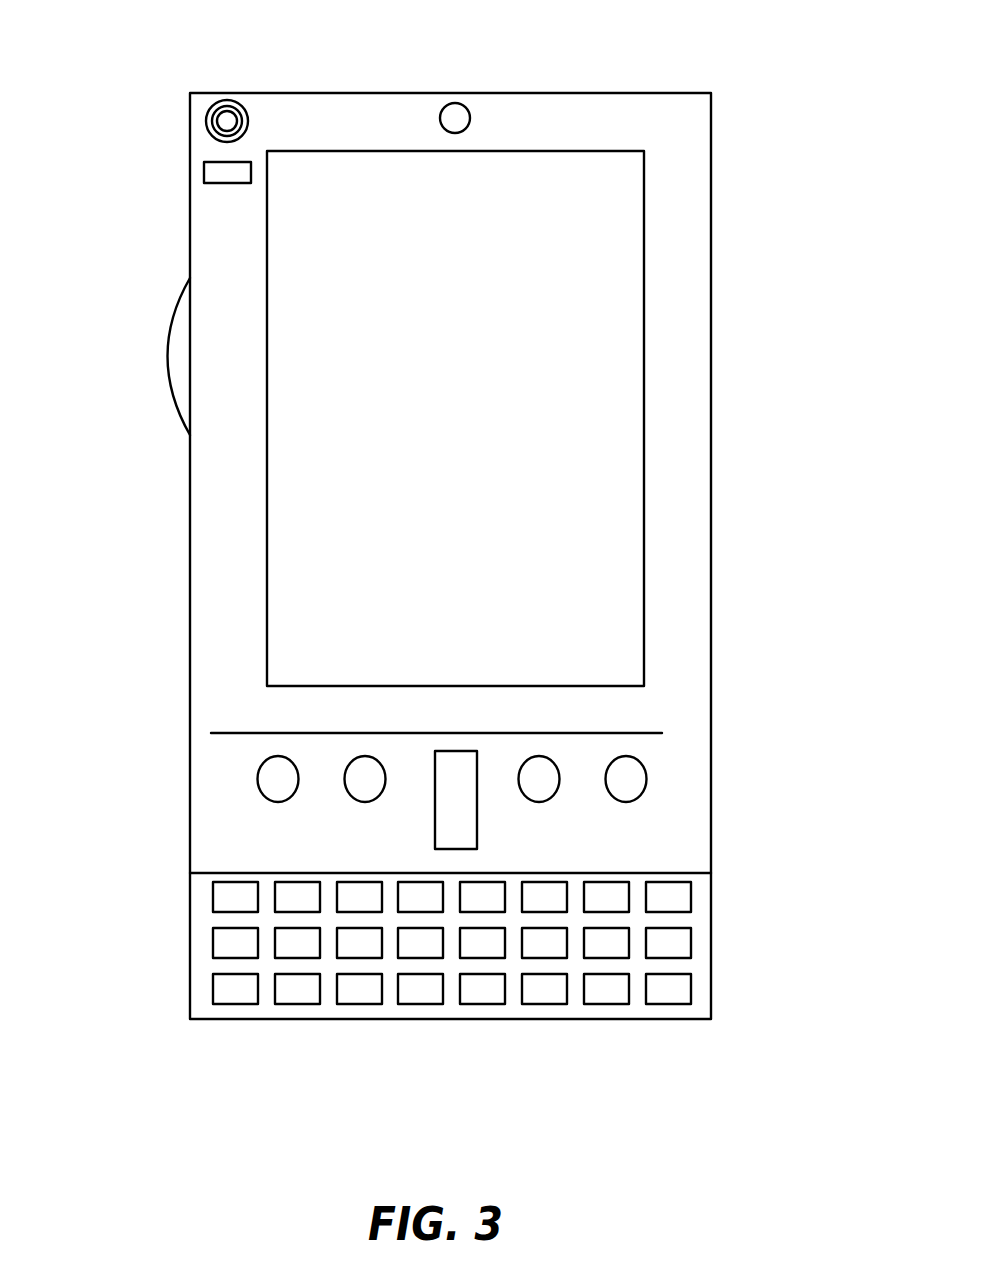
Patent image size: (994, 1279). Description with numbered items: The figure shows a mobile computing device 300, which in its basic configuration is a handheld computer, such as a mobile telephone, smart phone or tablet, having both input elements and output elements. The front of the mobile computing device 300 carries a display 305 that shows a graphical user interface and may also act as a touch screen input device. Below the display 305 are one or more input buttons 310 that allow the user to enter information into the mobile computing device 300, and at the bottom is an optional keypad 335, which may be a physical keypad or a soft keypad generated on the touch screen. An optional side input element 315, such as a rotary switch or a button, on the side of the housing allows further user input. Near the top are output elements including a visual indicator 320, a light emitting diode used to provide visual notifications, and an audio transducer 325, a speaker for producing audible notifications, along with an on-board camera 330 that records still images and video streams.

The mobile computing device 300 is at (698, 113).
The display 305 is at (382, 596).
The input buttons 310 is at (453, 807).
The side input element 315 is at (181, 355).
The visual indicator 320 is at (206, 178).
The audio transducer 325 is at (206, 121).
The on-board camera 330 is at (467, 117).
The keypad 335 is at (201, 993).